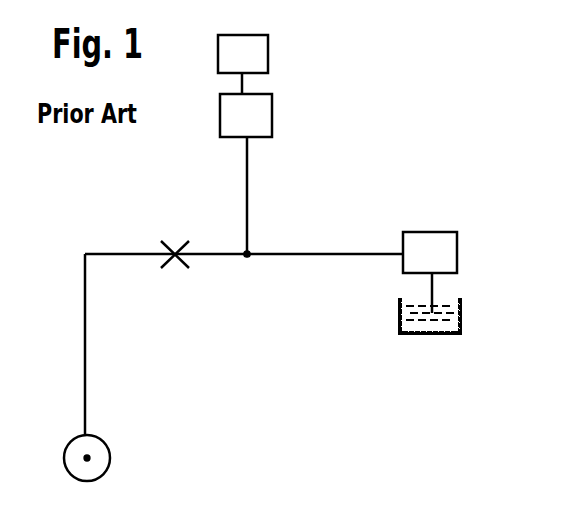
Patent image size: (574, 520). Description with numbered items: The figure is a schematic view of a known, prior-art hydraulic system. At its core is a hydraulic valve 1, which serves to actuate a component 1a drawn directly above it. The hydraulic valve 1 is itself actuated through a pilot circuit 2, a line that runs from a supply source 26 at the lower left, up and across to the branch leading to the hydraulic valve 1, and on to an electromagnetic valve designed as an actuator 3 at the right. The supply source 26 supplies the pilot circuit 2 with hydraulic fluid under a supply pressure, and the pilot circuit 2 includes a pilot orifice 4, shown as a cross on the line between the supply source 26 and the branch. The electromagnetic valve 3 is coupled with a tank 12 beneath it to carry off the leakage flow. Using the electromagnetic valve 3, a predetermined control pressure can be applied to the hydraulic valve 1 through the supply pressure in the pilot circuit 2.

The component 1a is at (258, 56).
The hydraulic valve 1 is at (260, 115).
The pilot circuit 2 is at (84, 350).
The pilot orifice 4 is at (177, 238).
The actuator 3 is at (455, 254).
The tank 12 is at (460, 310).
The supply source 26 is at (106, 456).